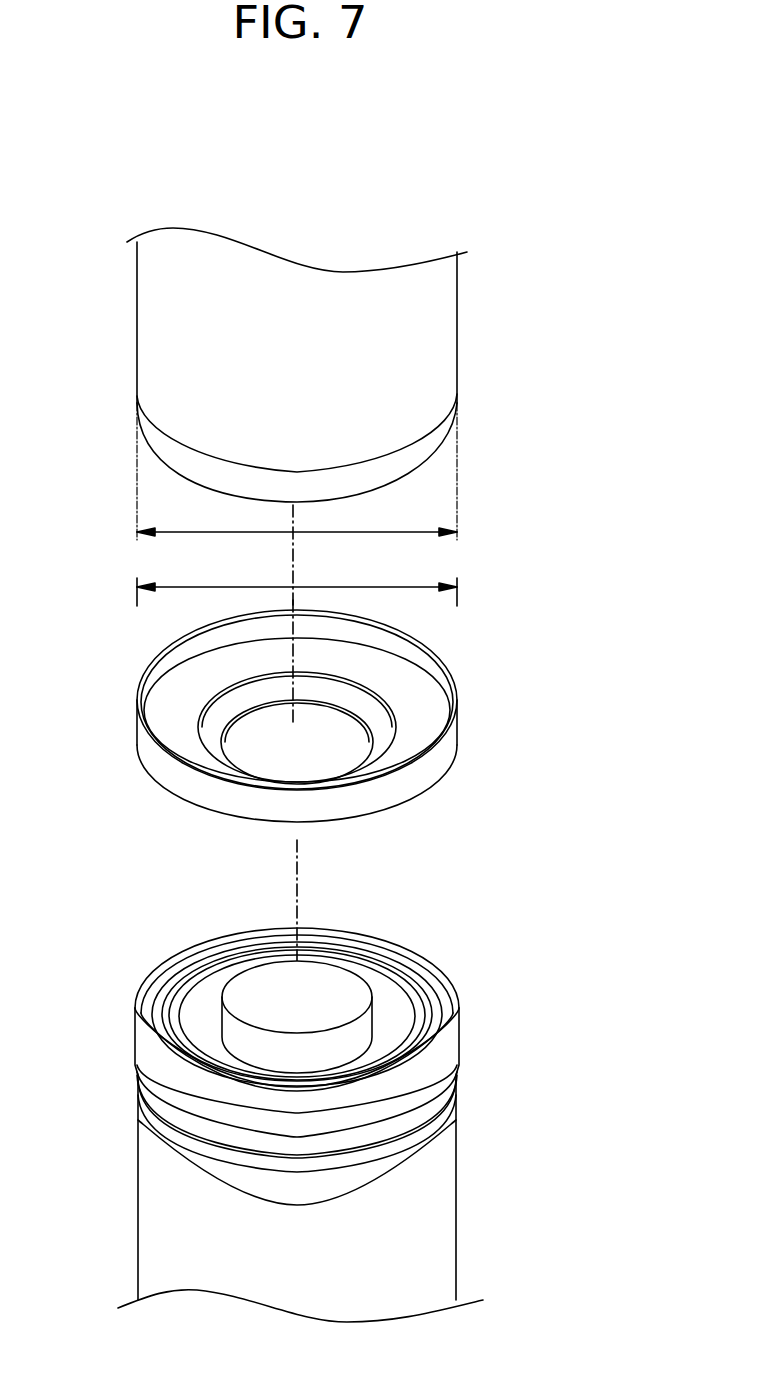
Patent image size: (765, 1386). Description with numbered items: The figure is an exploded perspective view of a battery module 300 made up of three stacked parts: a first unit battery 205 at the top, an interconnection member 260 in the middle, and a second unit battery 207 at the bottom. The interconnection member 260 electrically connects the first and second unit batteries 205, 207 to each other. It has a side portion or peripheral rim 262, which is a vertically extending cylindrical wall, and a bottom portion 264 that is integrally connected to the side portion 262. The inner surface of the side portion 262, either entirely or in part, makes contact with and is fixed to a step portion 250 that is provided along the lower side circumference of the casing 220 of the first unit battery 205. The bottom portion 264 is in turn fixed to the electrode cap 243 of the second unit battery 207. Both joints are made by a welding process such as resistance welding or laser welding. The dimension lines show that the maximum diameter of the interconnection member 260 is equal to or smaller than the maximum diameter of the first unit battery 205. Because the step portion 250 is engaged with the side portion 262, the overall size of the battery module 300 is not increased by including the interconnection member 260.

The battery module 300 is at (268, 157).
The first unit battery 205 is at (308, 367).
The casing 220 is at (152, 326).
The step portion 250 is at (168, 453).
The interconnection member 260 is at (302, 711).
The side portion 262 is at (450, 678).
The bottom portion 264 is at (213, 749).
The second unit battery 207 is at (361, 1081).
The electrode cap 243 is at (357, 997).